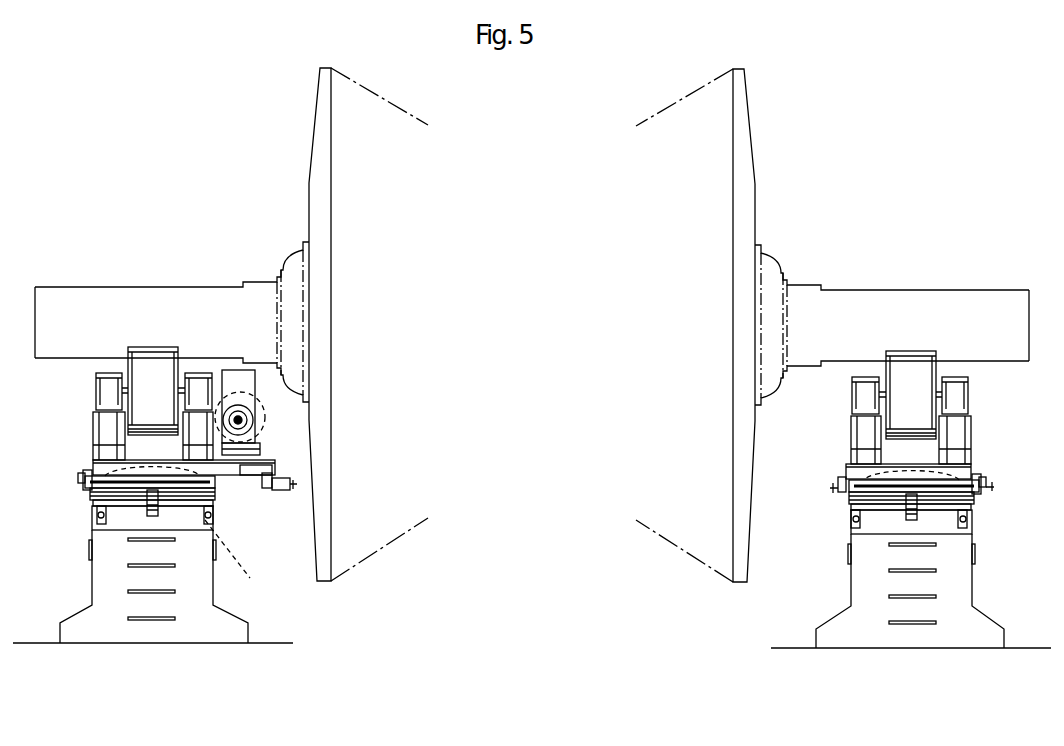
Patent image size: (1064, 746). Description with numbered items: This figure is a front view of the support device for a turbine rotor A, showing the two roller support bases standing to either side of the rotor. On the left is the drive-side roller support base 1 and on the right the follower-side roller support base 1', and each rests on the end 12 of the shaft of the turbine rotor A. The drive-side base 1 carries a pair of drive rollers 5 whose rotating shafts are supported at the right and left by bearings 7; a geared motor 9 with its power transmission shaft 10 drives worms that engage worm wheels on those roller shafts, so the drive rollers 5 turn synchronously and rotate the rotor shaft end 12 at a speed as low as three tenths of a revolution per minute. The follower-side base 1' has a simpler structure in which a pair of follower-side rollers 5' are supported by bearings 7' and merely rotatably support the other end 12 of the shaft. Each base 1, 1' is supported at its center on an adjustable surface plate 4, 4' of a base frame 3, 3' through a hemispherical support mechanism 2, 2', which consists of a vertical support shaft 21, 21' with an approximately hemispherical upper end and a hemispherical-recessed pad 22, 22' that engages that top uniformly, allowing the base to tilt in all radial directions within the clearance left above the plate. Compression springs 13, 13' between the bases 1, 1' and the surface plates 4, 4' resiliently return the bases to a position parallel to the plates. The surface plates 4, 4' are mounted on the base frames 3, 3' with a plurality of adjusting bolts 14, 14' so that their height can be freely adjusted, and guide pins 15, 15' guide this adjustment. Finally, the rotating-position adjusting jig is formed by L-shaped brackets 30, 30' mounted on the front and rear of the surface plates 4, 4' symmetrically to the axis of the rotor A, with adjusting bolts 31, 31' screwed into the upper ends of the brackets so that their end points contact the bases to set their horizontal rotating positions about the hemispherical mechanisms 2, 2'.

The turbine rotor A is at (675, 112).
The end of the shaft of the turbine rotor 12 is at (137, 290).
The drive-side roller support base 1 is at (124, 459).
The follower-side roller support base 1' is at (949, 467).
The hemispherical support mechanism 2 is at (118, 474).
The hemispherical support mechanism 2' is at (933, 464).
The base frame 3 is at (153, 586).
The base frame 3' is at (911, 591).
The adjustable surface plate 4 is at (125, 505).
The adjustable surface plate 4' is at (926, 504).
The drive roller 5 is at (153, 374).
The follower-side roller 5' is at (911, 378).
The bearing 7 is at (153, 387).
The bearing 7' is at (914, 391).
The geared motor 9 is at (262, 418).
The power transmission shaft 10 is at (240, 422).
The compression spring 13 is at (322, 494).
The compression spring 13' is at (903, 530).
The adjusting bolt 14 is at (153, 547).
The adjusting bolt 14' is at (917, 546).
The guide pin 15 is at (125, 539).
The guide pin 15' is at (887, 538).
The vertical support shaft 21 is at (184, 540).
The vertical support shaft 21' is at (893, 519).
The hemispherical-recessed pad 22 is at (184, 496).
The hemispherical-recessed pad 22' is at (884, 456).
The L-shaped bracket 30 is at (327, 479).
The L-shaped bracket 30' is at (916, 508).
The adjusting bolt 31 is at (334, 461).
The adjusting bolt 31' is at (909, 484).